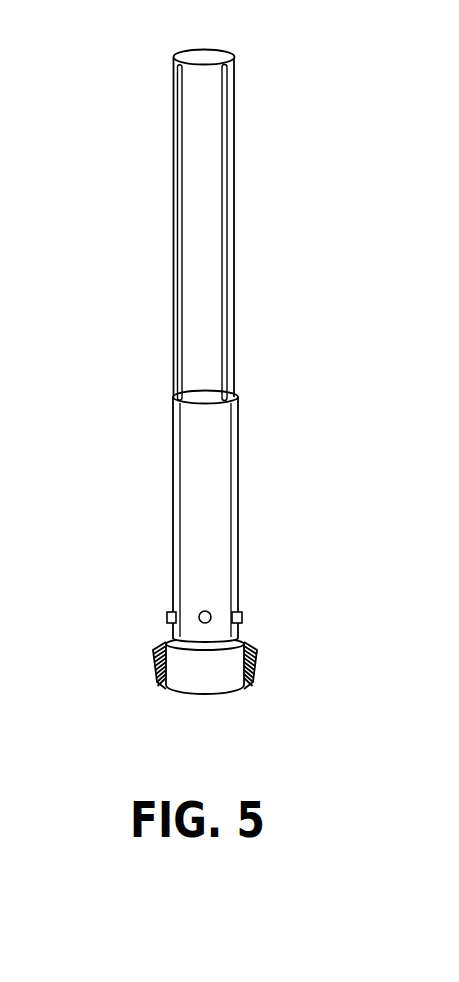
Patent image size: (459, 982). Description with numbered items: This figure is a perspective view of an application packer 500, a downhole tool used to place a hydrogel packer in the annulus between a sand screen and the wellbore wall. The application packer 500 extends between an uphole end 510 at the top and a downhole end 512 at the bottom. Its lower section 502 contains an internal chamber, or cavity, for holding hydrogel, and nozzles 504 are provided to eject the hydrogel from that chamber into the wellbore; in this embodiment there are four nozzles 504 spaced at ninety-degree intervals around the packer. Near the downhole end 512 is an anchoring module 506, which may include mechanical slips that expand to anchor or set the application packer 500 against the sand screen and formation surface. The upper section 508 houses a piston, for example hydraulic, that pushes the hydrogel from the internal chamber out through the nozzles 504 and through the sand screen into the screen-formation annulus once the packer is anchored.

The application packer 500 is at (278, 99).
The lower section 502 is at (212, 487).
The nozzles 504 is at (243, 611).
The anchoring module 506 is at (152, 665).
The upper section 508 is at (217, 271).
The uphole end 510 is at (198, 55).
The downhole end 512 is at (218, 697).